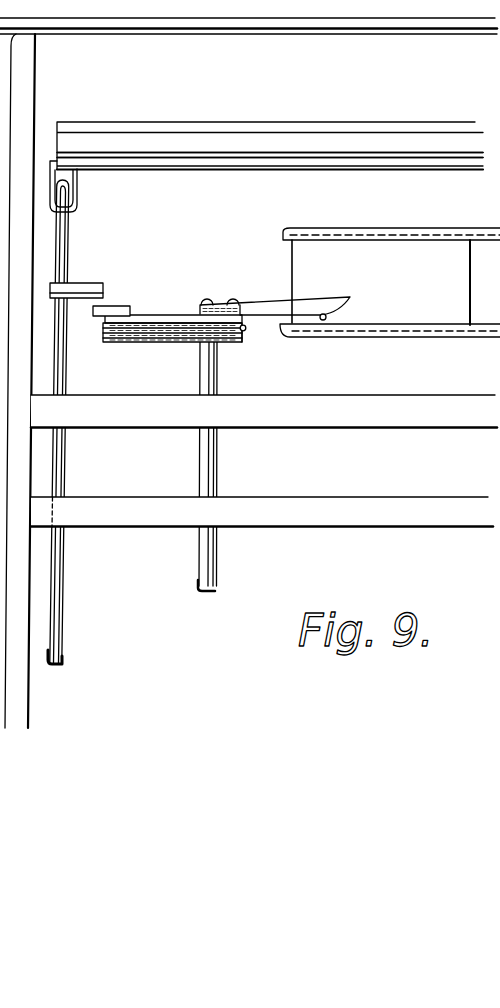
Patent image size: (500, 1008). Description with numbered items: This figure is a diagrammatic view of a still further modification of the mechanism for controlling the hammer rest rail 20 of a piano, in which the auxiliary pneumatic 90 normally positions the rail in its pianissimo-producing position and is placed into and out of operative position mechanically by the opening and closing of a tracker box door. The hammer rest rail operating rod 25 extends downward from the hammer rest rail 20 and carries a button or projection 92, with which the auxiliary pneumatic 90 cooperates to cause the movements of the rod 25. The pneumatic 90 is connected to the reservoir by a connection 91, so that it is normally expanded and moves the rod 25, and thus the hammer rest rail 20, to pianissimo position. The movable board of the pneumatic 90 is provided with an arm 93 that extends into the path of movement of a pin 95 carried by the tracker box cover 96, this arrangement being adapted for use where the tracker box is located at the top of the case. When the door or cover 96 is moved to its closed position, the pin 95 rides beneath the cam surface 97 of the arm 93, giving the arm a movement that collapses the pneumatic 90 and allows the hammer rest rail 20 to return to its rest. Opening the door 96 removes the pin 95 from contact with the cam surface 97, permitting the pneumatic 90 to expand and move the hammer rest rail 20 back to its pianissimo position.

The hammer rest rail 20 is at (273, 162).
The hammer rest rail operating rod 25 is at (67, 388).
The auxiliary pneumatic 90 is at (168, 343).
The connection 91 is at (207, 480).
The button or projection 92 is at (83, 274).
The arm 93 is at (260, 292).
The pin 95 is at (330, 316).
The tracker box cover 96 is at (391, 276).
The cam surface 97 is at (313, 317).